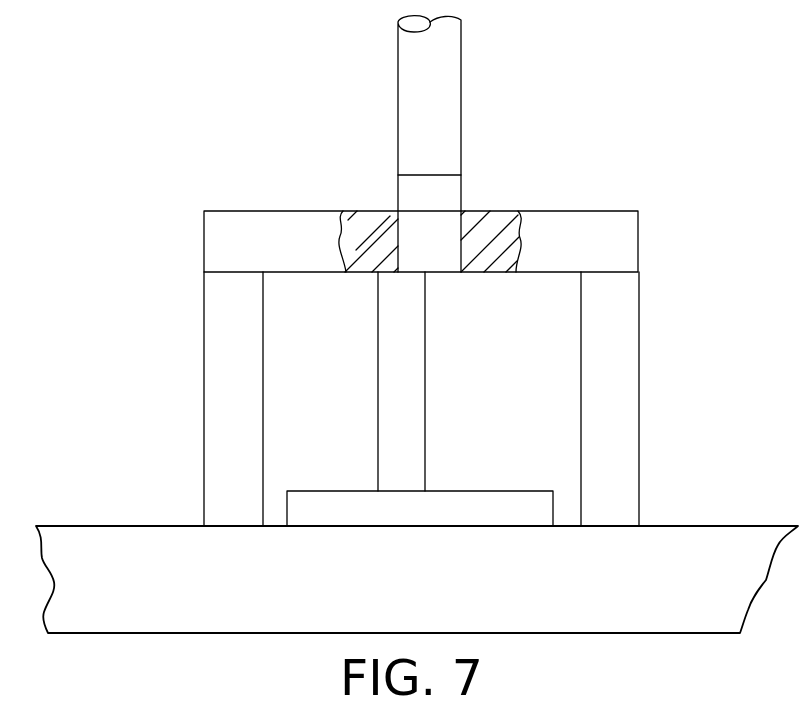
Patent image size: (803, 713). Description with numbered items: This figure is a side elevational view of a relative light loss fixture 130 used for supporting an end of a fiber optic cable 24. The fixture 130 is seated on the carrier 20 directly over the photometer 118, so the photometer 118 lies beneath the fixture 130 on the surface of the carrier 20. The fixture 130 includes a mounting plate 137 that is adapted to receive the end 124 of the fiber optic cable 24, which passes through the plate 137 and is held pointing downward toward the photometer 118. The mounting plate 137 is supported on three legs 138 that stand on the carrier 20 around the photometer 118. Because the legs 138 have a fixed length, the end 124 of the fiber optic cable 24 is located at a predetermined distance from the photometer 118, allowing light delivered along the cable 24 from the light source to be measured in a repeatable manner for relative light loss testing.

The carrier 20 is at (64, 526).
The fiber optic cable 24 is at (398, 45).
The photometer 118 is at (312, 491).
The end of the fiber optic cable 124 is at (462, 188).
The relative light loss fixture 130 is at (563, 183).
The mounting plate 137 is at (220, 211).
The legs 138 is at (204, 347).